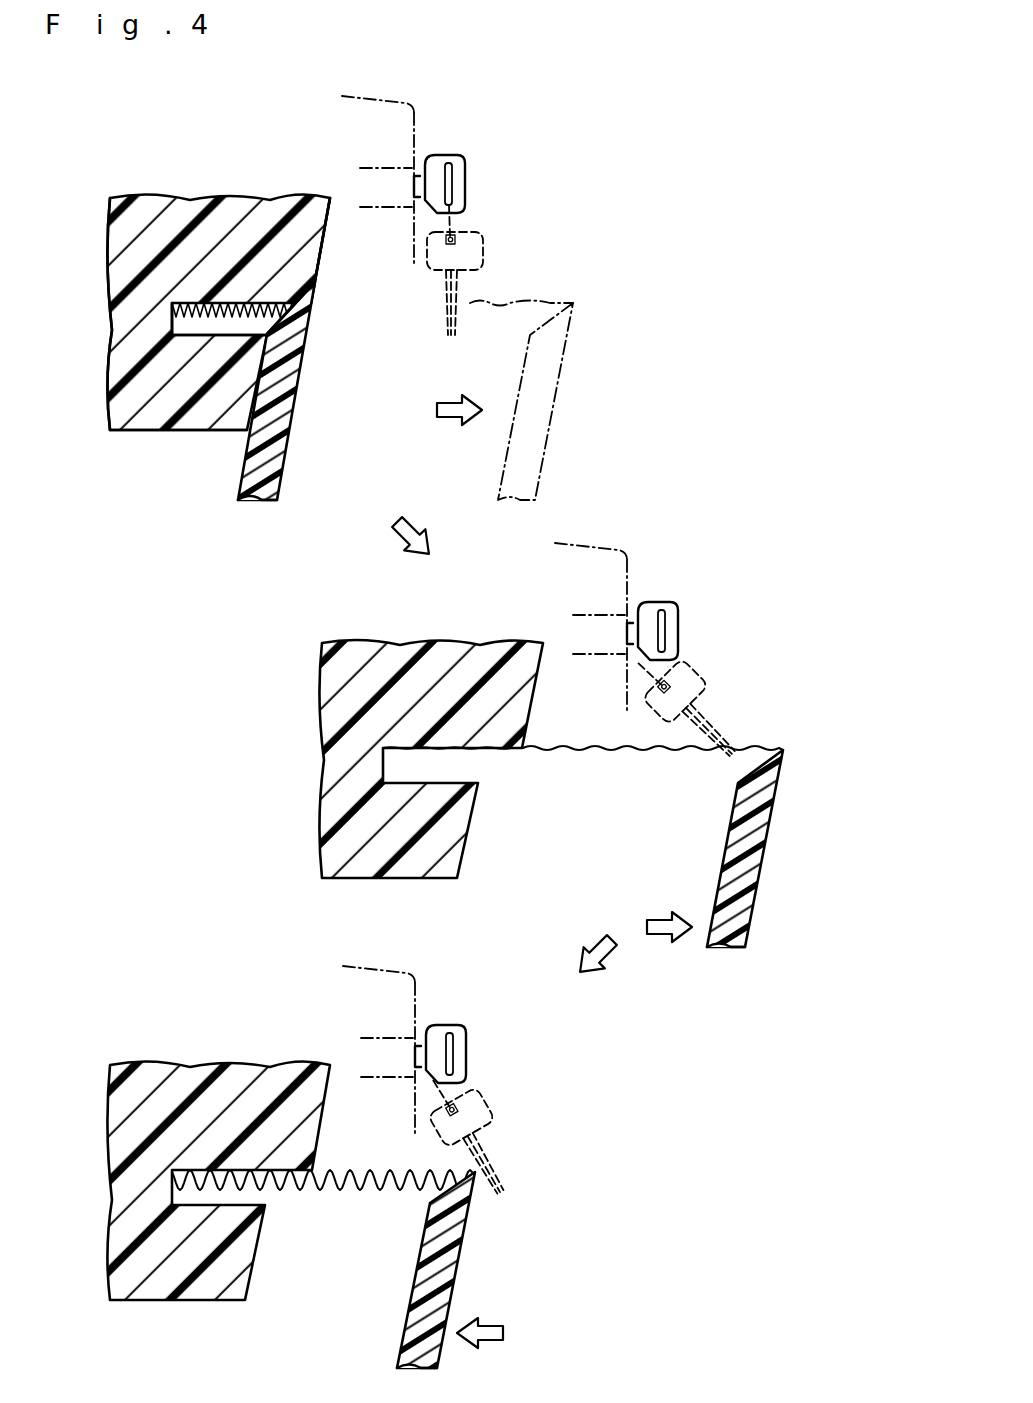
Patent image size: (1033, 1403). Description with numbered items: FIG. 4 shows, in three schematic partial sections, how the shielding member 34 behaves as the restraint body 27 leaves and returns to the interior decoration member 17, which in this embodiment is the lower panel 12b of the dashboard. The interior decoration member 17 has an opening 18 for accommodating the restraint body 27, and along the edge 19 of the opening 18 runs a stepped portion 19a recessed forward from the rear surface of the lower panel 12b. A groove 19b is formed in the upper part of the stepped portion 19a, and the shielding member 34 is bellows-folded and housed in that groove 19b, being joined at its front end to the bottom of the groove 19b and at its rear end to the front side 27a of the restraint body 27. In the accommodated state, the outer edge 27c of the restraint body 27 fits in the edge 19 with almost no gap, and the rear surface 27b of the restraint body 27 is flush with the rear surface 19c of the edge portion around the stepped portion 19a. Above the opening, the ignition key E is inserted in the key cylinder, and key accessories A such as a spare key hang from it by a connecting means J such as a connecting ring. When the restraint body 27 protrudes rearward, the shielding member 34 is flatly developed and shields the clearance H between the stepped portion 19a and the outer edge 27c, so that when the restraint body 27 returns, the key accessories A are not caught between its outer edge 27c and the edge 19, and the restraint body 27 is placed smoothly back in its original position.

The lower panel 12b is at (147, 213).
The interior decoration member 17 is at (209, 258).
The opening 18 is at (218, 462).
The edge of the opening 19 is at (291, 205).
The stepped portion 19a is at (120, 405).
The groove 19b is at (195, 323).
The rear surface of the edge portion 19c is at (325, 248).
The restraint body 27 is at (504, 391).
The front side of the restraint body 27a is at (752, 770).
The rear surface of the restraint body 27b is at (300, 322).
The outer edge of the restraint body 27c is at (504, 391).
The shielding member 34 is at (243, 292).
The ignition key E is at (444, 166).
The connecting means J is at (457, 222).
The key accessories A is at (463, 290).
The clearance H is at (592, 885).